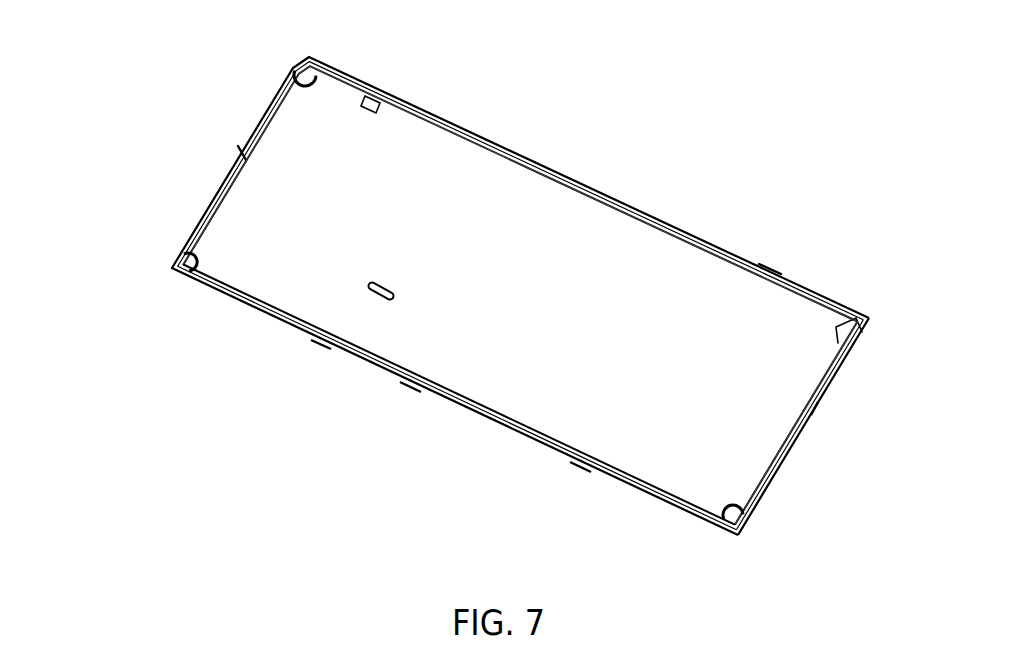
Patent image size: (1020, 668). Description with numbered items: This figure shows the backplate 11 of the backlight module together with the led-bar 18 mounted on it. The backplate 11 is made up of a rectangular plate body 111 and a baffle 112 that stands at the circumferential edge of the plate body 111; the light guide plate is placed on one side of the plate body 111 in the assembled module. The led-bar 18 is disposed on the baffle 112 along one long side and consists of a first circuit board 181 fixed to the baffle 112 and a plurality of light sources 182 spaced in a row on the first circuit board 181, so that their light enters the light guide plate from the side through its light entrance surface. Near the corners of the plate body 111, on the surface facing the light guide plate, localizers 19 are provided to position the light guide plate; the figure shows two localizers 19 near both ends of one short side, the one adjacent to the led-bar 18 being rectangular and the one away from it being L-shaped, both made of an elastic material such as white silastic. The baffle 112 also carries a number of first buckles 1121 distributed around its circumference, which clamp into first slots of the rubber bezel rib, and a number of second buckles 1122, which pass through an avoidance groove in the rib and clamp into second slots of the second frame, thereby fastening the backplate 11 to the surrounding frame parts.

The backplate 11 is at (536, 295).
The plate body 111 is at (667, 282).
The baffle 112 is at (633, 206).
The first buckle 1121 is at (692, 513).
The second buckle 1122 is at (272, 316).
The led-bar 18 is at (589, 189).
The first circuit board 181 is at (487, 139).
The light source 182 is at (558, 173).
The localizer 19 is at (280, 86).